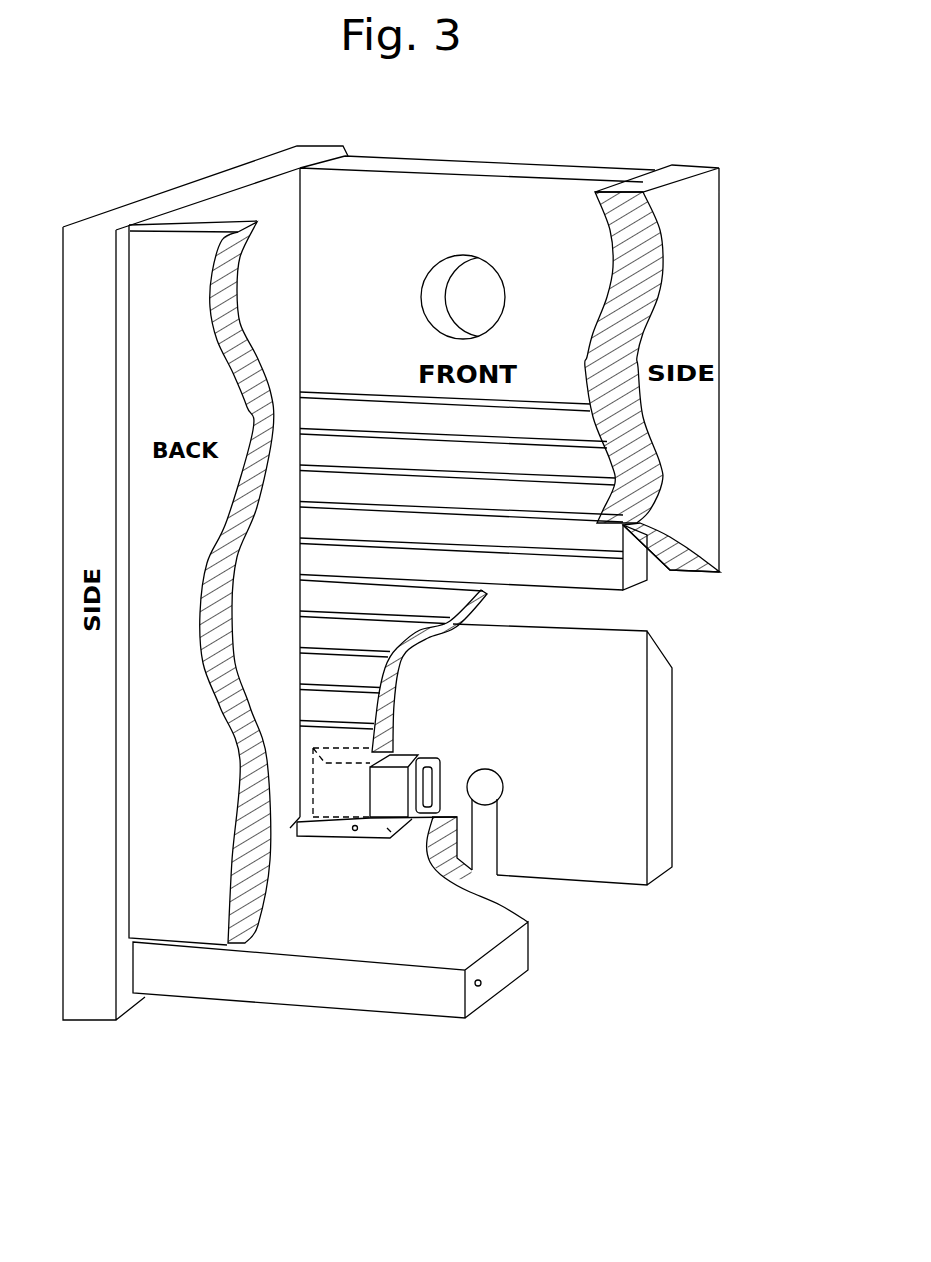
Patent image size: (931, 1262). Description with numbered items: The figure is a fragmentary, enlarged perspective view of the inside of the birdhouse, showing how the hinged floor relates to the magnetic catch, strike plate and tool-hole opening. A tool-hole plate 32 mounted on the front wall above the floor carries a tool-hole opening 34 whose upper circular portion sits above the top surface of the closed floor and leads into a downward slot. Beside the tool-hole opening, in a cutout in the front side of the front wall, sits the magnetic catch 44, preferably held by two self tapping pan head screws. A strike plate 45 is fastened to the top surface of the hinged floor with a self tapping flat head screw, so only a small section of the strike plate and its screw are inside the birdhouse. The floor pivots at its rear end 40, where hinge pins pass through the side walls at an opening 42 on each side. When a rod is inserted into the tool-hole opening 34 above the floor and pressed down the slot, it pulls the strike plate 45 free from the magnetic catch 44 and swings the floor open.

The tool-hole plate 32 is at (628, 772).
The tool-hole opening 34 is at (497, 784).
The magnetic catch 44 is at (407, 750).
The strike plate 45 is at (398, 836).
The rear end 40 is at (432, 957).
The opening 42 is at (480, 986).